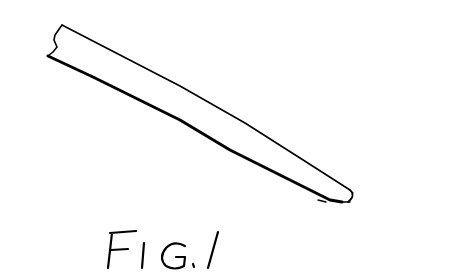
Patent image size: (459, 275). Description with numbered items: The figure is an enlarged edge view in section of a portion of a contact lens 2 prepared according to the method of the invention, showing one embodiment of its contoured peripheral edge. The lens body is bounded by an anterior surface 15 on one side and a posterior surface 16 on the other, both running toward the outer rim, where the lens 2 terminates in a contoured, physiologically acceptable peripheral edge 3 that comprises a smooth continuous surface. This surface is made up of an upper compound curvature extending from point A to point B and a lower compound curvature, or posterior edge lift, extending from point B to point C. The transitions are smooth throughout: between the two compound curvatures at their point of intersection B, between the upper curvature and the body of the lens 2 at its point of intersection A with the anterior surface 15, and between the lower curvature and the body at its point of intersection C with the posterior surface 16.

The contact lens 2 is at (224, 133).
The anterior surface 15 is at (232, 110).
The posterior surface 16 is at (102, 82).
The peripheral edge 3 is at (354, 201).
The point of intersection A is at (353, 193).
The point of intersection B is at (349, 203).
The point of intersection C is at (322, 202).